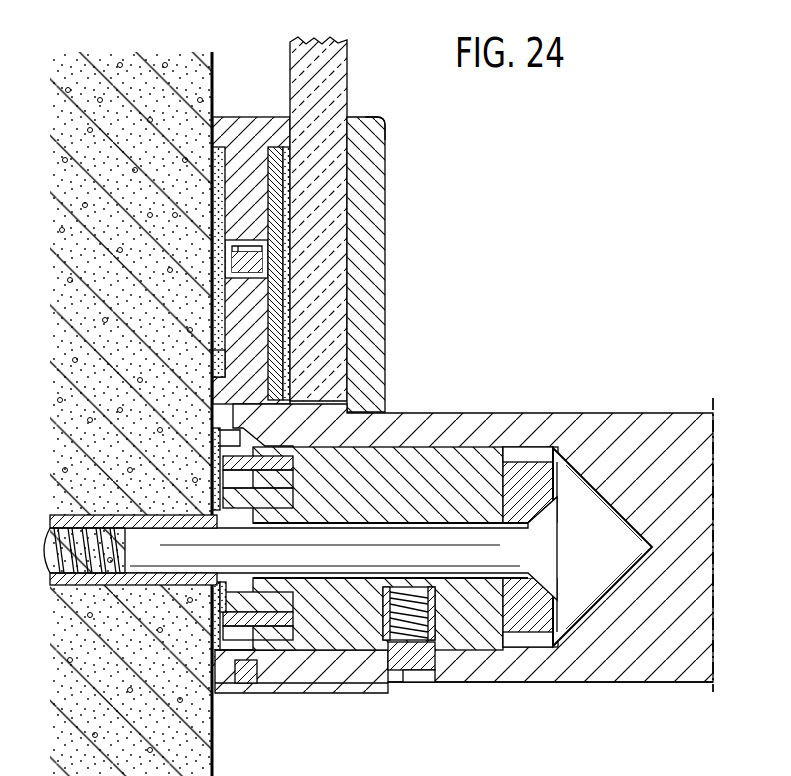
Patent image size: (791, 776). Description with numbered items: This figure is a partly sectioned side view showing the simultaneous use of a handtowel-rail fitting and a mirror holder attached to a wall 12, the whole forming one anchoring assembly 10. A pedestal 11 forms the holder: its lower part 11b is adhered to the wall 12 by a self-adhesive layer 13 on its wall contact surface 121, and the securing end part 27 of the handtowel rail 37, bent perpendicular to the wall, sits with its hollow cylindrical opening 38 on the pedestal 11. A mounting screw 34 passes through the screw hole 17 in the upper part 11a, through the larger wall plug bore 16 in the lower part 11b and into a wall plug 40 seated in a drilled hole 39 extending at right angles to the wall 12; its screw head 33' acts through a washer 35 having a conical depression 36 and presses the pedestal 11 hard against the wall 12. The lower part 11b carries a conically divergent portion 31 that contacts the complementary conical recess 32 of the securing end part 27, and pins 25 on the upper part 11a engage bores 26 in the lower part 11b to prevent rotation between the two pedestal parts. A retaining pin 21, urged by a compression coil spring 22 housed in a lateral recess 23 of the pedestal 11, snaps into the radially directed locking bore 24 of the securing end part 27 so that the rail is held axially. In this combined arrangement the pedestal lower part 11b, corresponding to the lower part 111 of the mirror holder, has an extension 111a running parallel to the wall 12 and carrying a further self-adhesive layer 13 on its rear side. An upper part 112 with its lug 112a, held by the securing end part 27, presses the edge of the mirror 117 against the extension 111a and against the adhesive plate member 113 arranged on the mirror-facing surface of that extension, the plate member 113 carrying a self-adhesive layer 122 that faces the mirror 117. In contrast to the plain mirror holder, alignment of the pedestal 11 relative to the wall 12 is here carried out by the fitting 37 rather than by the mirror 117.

The anchor assembly 10 is at (288, 114).
The pedestal 11 is at (436, 438).
The upper part of the pedestal 11a is at (330, 680).
The lower part of the pedestal 11b is at (234, 694).
The wall 12 is at (133, 63).
The self-adhesive layer 13 is at (212, 202).
The wall plug bore 16 is at (213, 602).
The screw hole 17 is at (341, 548).
The retaining pin 21 is at (398, 680).
The compression coil spring 22 is at (385, 606).
The lateral recess 23 is at (434, 598).
The locking bore 24 is at (425, 682).
The pin 25 is at (222, 470).
The bore 26 is at (224, 490).
The securing end part 27 is at (522, 672).
The conically divergent portion 31 is at (218, 433).
The conical recess 32 is at (257, 682).
The screw head 33' is at (571, 561).
The mounting screw 34 is at (440, 530).
The washer 35 is at (527, 468).
The conical depression 36 is at (548, 506).
The handtowel rail 37 is at (636, 686).
The hollow cylindrical opening 38 is at (577, 615).
The drilled hole 39 is at (105, 588).
The wall plug 40 is at (135, 520).
The lower part 111 is at (210, 133).
The extension 111a is at (241, 130).
The upper part 112 is at (390, 177).
The lug 112a is at (385, 129).
The adhesive plate member 113 is at (280, 296).
The mirror 117 is at (328, 42).
The wall contact surface 121 is at (213, 385).
The self-adhesive layer 122 is at (290, 209).